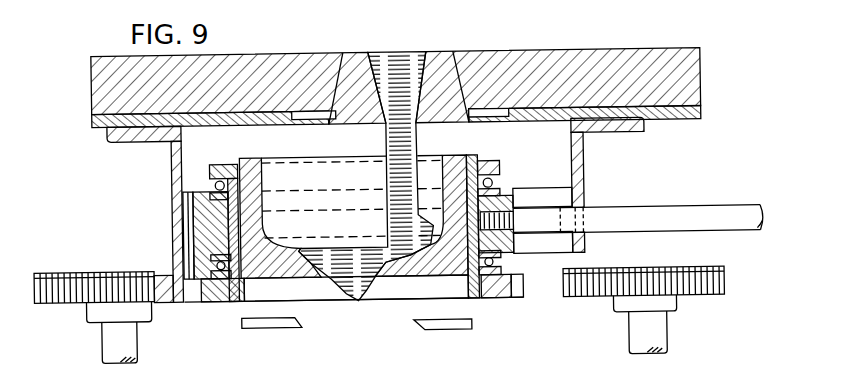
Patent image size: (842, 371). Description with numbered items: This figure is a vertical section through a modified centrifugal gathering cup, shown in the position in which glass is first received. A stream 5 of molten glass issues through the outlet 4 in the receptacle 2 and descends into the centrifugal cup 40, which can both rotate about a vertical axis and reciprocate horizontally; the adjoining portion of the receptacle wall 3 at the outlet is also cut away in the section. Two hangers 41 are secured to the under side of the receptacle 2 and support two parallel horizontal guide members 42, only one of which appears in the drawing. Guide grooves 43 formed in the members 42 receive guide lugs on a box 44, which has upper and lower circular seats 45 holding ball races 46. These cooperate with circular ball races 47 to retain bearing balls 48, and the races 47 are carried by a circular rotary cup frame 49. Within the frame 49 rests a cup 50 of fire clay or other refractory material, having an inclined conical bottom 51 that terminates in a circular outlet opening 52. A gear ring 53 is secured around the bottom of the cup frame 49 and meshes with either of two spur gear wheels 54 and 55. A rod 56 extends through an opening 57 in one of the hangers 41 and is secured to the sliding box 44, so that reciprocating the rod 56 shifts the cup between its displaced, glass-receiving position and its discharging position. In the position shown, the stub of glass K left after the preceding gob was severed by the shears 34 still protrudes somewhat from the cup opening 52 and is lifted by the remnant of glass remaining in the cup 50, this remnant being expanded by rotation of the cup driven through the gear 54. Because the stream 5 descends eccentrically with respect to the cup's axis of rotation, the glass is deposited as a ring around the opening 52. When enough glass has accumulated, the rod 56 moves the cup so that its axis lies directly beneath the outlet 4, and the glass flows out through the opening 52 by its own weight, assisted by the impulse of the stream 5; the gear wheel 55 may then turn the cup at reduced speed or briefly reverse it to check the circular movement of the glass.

The receptacle 2 is at (693, 84).
The plate section 3 is at (462, 119).
The outlet 4 is at (388, 126).
The stream 5 is at (416, 130).
The stub of glass K is at (354, 299).
The shears 34 is at (265, 318).
The centrifugal cup 40 is at (303, 154).
The hangers 41 is at (172, 150).
The guide members 42 is at (543, 194).
The guide grooves 43 is at (192, 232).
The box 44 is at (190, 220).
The circular seats 45 is at (185, 201).
The ball races 46 is at (212, 186).
The circular ball races 47 is at (212, 160).
The bearing balls 48 is at (210, 259).
The rotary cup frame 49 is at (356, 289).
The cup 50 is at (266, 171).
The inclined conical bottom 51 is at (302, 253).
The outlet opening 52 is at (368, 279).
The gear ring 53 is at (502, 297).
The spur gear wheel 54 is at (57, 287).
The spur gear wheel 55 is at (710, 283).
The rod 56 is at (705, 216).
The opening 57 is at (580, 215).